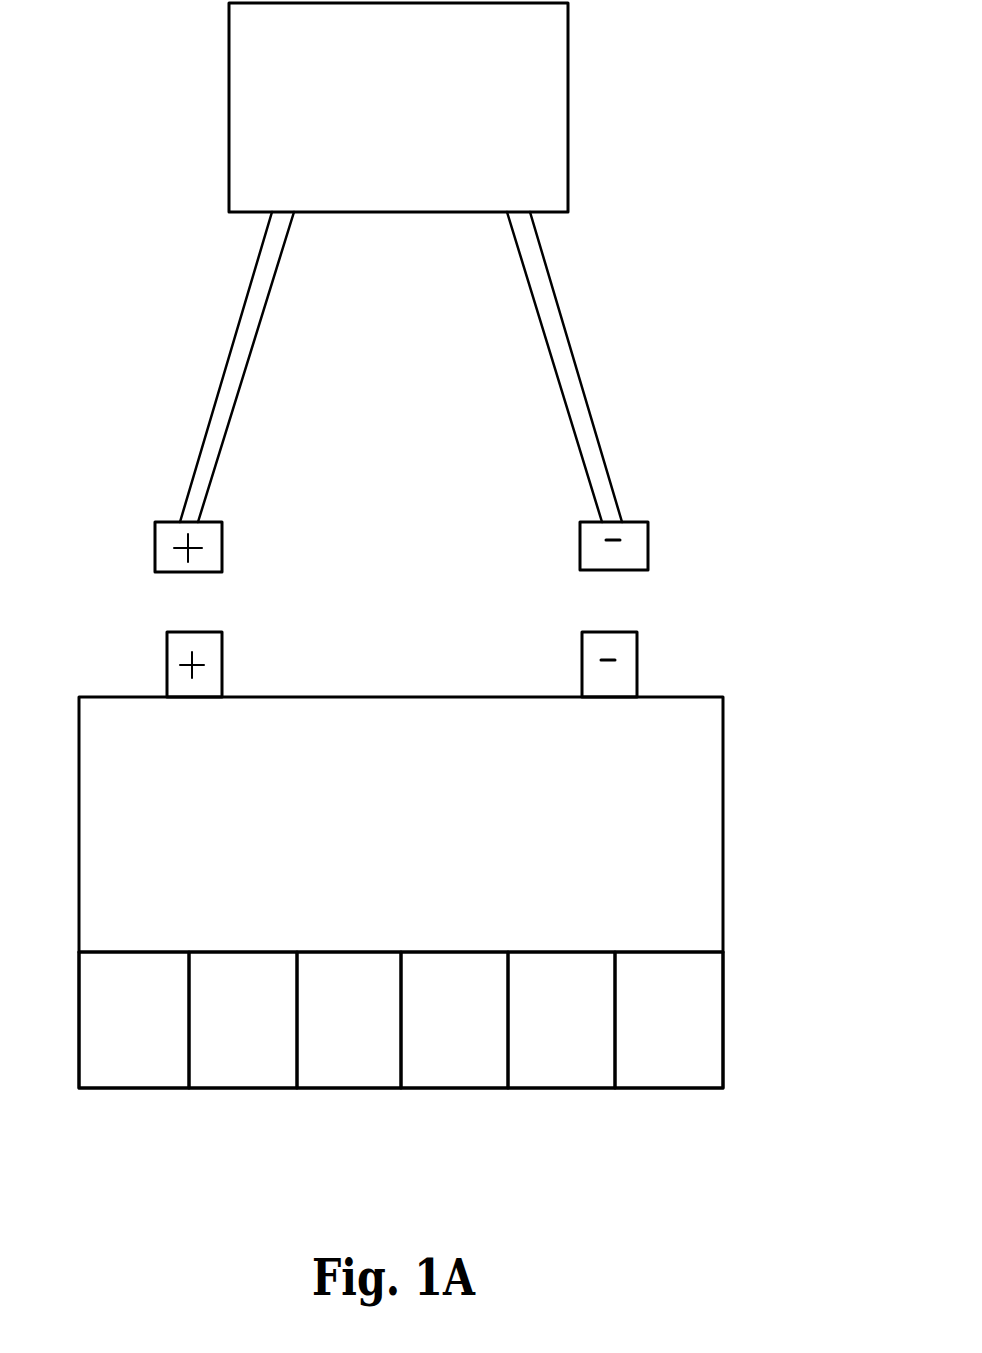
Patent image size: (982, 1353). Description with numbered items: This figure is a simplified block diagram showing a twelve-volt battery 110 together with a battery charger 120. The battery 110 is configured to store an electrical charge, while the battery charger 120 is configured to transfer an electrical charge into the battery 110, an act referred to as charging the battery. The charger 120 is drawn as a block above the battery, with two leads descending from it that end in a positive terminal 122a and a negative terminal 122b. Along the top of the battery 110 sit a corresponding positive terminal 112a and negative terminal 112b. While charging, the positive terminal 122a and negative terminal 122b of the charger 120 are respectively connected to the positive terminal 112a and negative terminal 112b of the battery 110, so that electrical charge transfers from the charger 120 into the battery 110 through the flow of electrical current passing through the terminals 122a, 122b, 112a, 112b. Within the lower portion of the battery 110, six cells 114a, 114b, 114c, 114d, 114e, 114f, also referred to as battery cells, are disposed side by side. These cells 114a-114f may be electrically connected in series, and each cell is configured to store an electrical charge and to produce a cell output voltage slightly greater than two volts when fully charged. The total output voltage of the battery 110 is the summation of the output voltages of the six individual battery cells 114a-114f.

The battery 110 is at (724, 722).
The positive terminal 112a is at (167, 652).
The negative terminal 112b is at (638, 648).
The battery cell 114a is at (138, 951).
The battery cell 114b is at (246, 951).
The battery cell 114c is at (352, 951).
The battery cell 114d is at (459, 951).
The battery cell 114e is at (564, 951).
The battery cell 114f is at (671, 951).
The battery charger 120 is at (570, 57).
The positive terminal 122a is at (236, 336).
The negative terminal 122b is at (567, 325).